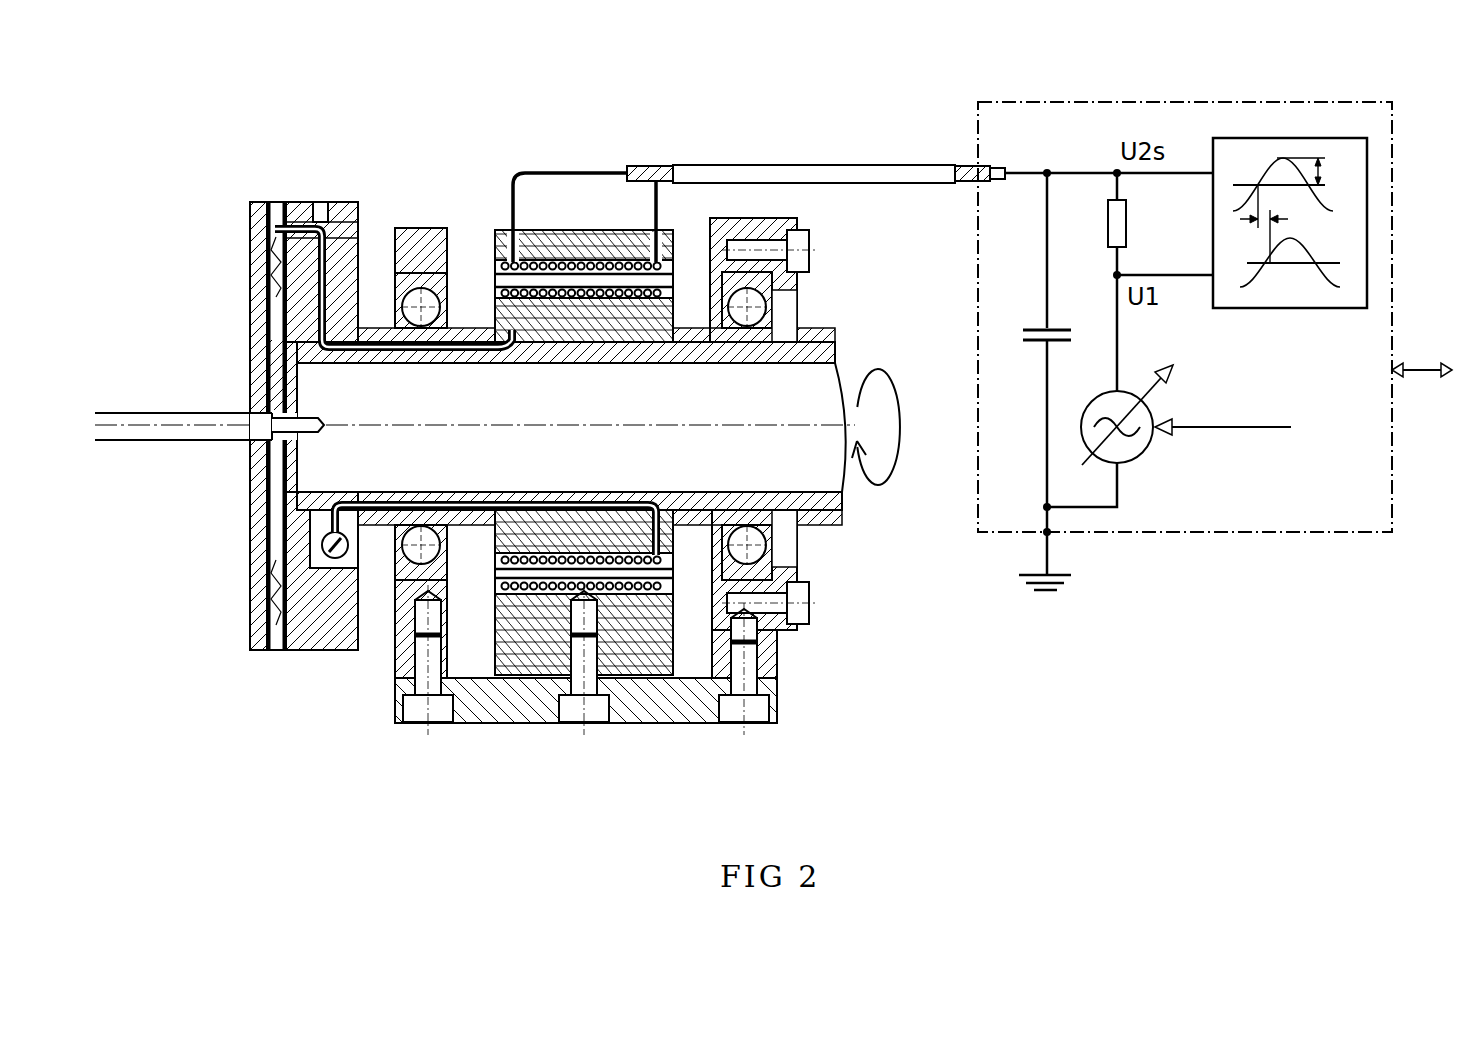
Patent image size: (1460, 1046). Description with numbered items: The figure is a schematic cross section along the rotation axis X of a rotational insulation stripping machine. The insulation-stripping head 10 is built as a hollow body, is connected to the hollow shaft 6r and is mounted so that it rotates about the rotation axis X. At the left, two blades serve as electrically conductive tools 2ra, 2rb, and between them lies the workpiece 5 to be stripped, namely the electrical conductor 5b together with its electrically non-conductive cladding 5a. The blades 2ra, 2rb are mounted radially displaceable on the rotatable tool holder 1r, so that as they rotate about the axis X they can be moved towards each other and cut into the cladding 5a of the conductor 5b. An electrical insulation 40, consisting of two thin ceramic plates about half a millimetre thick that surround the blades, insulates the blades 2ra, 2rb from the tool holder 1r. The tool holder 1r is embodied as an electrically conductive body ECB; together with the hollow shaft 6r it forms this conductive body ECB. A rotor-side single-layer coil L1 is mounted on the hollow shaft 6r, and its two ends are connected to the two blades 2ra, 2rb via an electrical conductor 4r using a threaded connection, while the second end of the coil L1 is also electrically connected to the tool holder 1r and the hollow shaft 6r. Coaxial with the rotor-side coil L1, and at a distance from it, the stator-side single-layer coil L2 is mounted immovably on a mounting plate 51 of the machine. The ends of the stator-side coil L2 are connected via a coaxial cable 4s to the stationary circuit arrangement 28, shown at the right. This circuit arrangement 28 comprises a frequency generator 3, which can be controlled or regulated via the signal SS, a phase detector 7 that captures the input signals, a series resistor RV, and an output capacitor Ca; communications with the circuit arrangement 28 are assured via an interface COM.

The insulation-stripping head 10 is at (812, 150).
The rotor-side coil L1 is at (554, 228).
The stator-side coil L2 is at (667, 228).
The coaxial cable 4s is at (1013, 172).
The stationary circuit arrangement 28 is at (1058, 102).
The phase detector 7 is at (1260, 138).
The blade 2ra is at (250, 305).
The blade 2rb is at (262, 533).
The electrical conductor 5b is at (248, 362).
The electrically non-conductive cladding 5a is at (243, 425).
The measuring rod 5 is at (193, 440).
The electrical insulation 40 is at (252, 613).
The tool holder 1r is at (297, 650).
The electrically conductive body ECB is at (333, 650).
The electrical conductor 4r is at (413, 363).
The mounting plate 51 is at (675, 725).
The hollow shaft 6r is at (825, 510).
The rotation axis X is at (858, 427).
The frequency generator 3 is at (1134, 434).
The series resistor RV is at (1099, 223).
The output capacitor Ca is at (1035, 355).
The signal SS is at (1223, 413).
The interface COM is at (1422, 343).